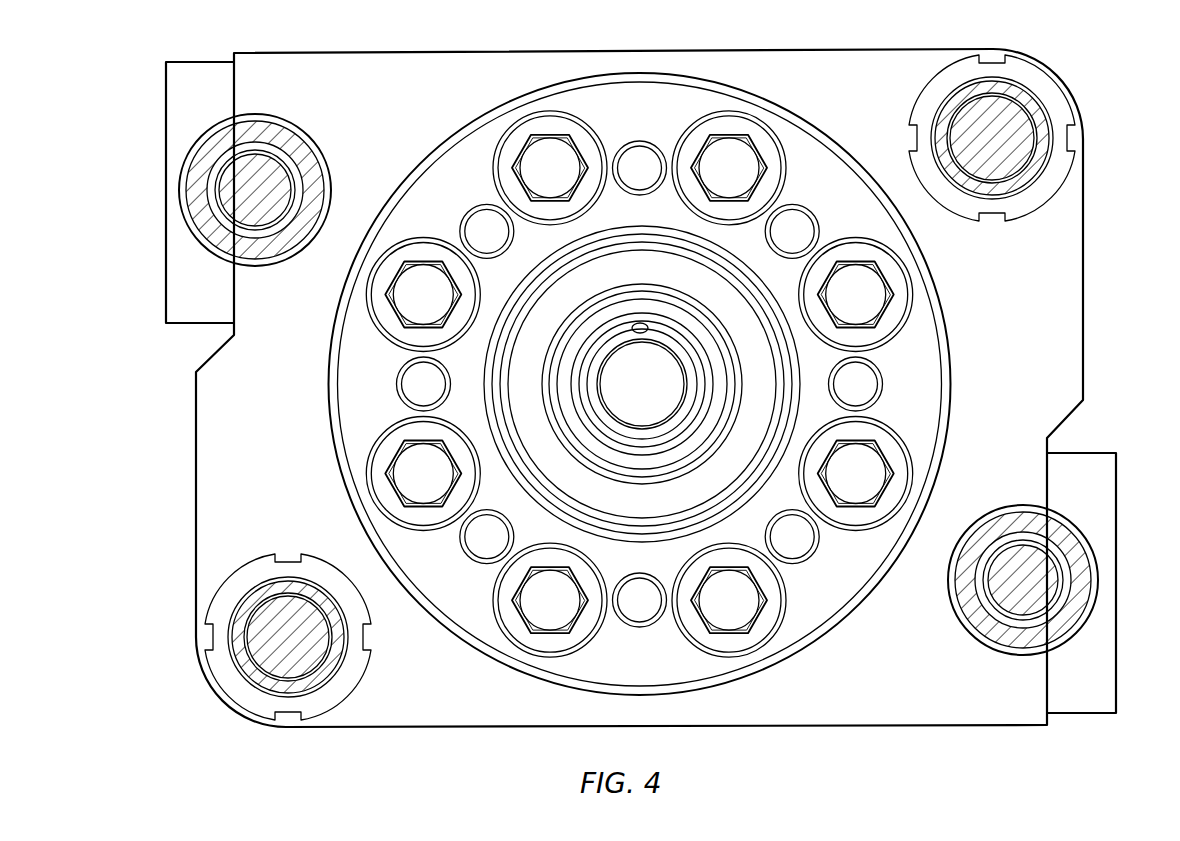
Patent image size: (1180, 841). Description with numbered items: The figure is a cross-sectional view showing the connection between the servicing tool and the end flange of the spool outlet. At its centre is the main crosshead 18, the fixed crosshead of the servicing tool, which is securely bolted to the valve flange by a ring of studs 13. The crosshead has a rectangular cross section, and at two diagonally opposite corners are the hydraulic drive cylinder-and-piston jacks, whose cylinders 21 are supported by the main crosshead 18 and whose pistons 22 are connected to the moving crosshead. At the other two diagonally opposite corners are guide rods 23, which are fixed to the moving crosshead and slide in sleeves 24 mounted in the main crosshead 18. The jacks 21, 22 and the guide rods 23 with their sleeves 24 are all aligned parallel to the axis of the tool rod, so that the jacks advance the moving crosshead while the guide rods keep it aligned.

The studs 13 is at (873, 310).
The main crosshead 18 is at (693, 98).
The hydraulic drive cylinder 21 is at (236, 212).
The piston 22 is at (195, 180).
The guide rod 23 is at (1020, 160).
The sleeve 24 is at (1037, 110).